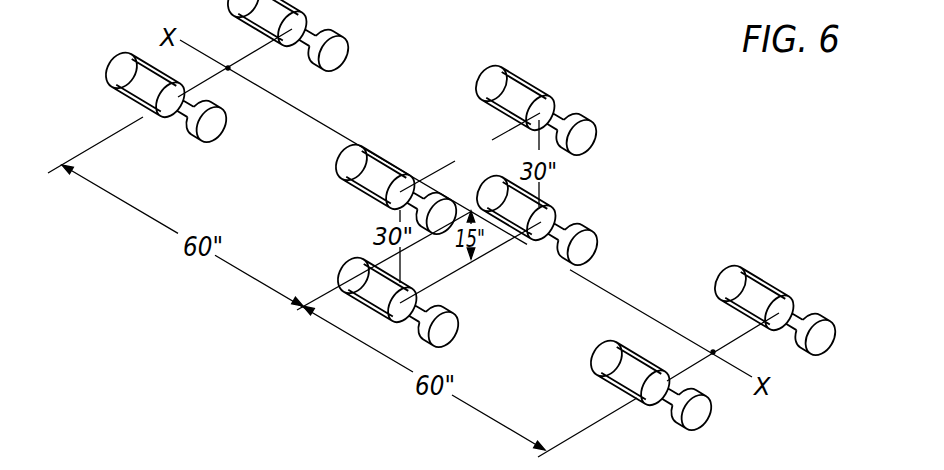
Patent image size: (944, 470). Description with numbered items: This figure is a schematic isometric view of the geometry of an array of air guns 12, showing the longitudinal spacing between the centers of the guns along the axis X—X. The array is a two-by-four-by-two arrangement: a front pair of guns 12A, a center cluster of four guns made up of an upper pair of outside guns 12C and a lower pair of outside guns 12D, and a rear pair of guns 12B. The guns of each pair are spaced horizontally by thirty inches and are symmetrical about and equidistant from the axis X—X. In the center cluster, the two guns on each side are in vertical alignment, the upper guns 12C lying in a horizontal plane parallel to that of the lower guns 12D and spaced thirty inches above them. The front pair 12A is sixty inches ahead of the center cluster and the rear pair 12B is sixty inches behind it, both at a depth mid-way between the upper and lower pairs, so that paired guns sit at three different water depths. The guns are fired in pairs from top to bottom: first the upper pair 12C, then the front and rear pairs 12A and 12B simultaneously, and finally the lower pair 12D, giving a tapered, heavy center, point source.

The air guns 12 is at (683, 207).
The front pair of air guns 12A is at (827, 353).
The rear pair of air guns 12B is at (313, 69).
The upper outside guns 12C is at (483, 98).
The lower outside guns 12D is at (572, 265).